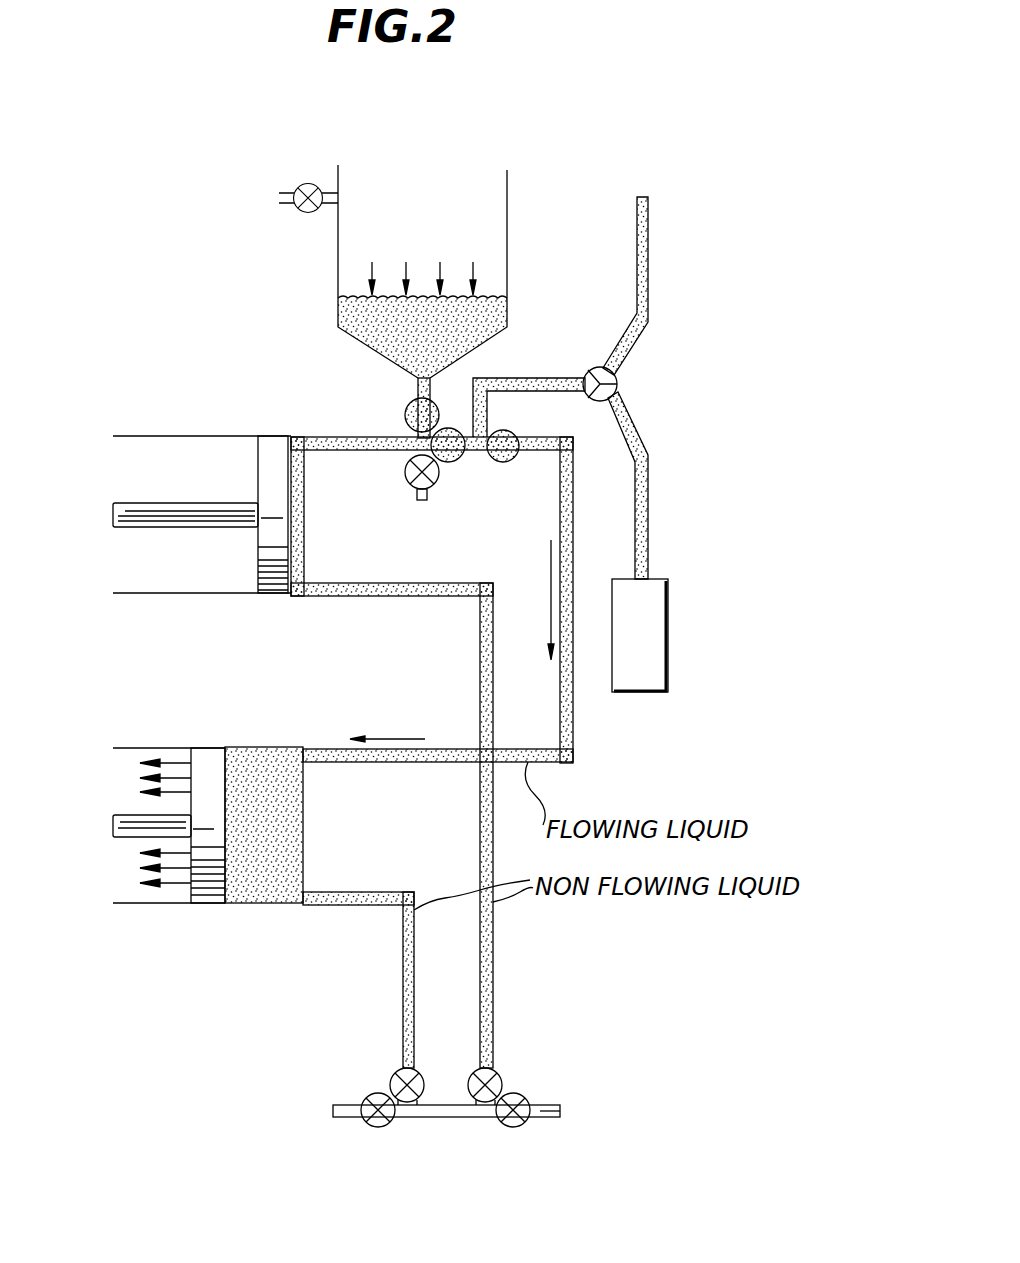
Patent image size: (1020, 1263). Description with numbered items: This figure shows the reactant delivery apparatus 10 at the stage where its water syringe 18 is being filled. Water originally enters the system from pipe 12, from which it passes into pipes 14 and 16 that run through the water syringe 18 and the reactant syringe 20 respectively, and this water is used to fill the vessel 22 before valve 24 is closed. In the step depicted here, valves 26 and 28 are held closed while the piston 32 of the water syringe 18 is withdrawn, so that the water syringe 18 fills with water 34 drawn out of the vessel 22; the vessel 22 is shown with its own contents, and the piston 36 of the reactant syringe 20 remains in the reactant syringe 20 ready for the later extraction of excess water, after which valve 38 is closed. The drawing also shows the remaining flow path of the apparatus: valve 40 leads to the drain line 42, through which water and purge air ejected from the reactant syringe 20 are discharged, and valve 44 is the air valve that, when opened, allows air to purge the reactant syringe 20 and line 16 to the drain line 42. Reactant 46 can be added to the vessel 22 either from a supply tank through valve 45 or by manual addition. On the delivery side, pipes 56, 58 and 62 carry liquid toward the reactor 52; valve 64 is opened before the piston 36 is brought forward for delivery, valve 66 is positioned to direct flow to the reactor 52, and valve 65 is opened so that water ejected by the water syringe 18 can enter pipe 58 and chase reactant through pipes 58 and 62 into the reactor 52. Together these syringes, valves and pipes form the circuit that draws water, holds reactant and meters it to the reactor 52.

The system 10 is at (153, 340).
The pipe 12 is at (340, 1117).
The pipe 14 is at (403, 952).
The pipe 16 is at (493, 945).
The water syringe 18 is at (140, 903).
The reactant syringe 20 is at (183, 593).
The vessel 22 is at (337, 240).
The valve 24 is at (365, 1100).
The valve 26 is at (395, 1075).
The valve 28 is at (505, 1075).
The piston 32 is at (130, 815).
The water 34 is at (292, 830).
The piston 36 is at (137, 503).
The valve 38 is at (405, 410).
The valve 40 is at (525, 1100).
The drain line 42 is at (560, 1105).
The valve 44 is at (408, 482).
The valve 45 is at (298, 186).
The reactant 46 is at (348, 316).
The reactor 52 is at (648, 680).
The pipe 56 is at (573, 735).
The pipe 58 is at (535, 376).
The pipe 62 is at (648, 478).
The valve 64 is at (458, 462).
The valve 65 is at (518, 438).
The valve 66 is at (618, 384).